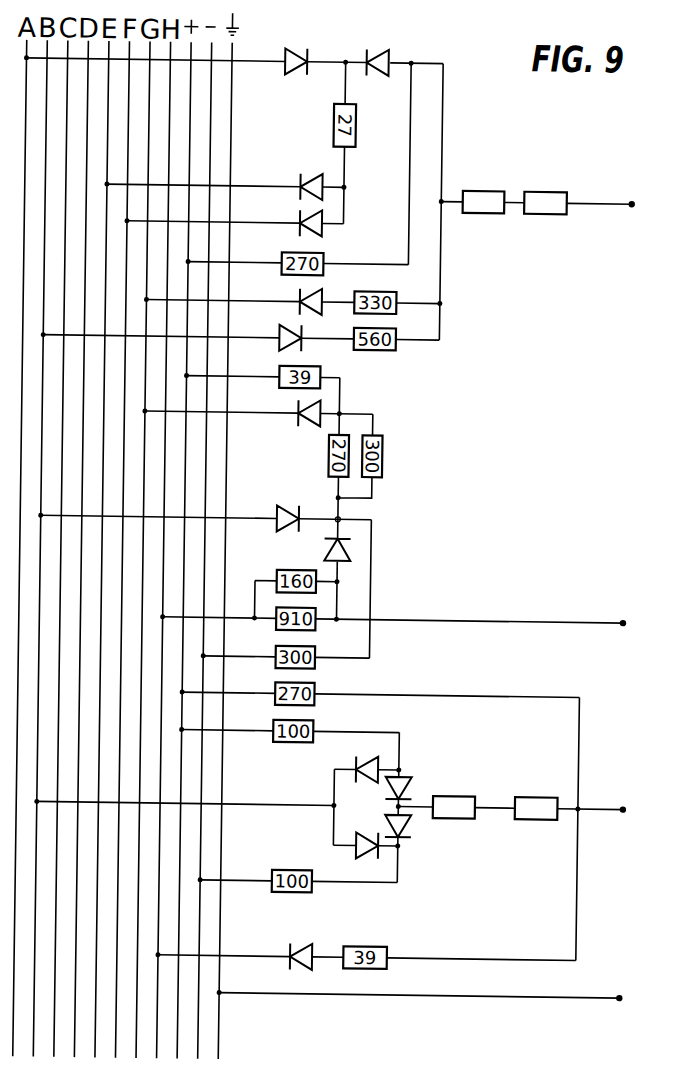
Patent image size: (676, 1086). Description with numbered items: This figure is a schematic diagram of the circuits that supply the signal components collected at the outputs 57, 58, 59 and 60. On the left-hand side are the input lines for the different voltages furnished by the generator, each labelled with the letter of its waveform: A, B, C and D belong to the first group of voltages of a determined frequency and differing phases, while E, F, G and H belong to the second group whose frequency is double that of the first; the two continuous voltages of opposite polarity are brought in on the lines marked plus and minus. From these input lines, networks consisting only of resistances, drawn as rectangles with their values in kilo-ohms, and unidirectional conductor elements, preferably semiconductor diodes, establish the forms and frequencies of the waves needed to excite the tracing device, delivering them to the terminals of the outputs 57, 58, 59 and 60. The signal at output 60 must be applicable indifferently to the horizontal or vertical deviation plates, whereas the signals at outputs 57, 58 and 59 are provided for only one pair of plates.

The output 57 is at (537, 194).
The output 58 is at (470, 608).
The output 59 is at (511, 801).
The output 60 is at (420, 983).